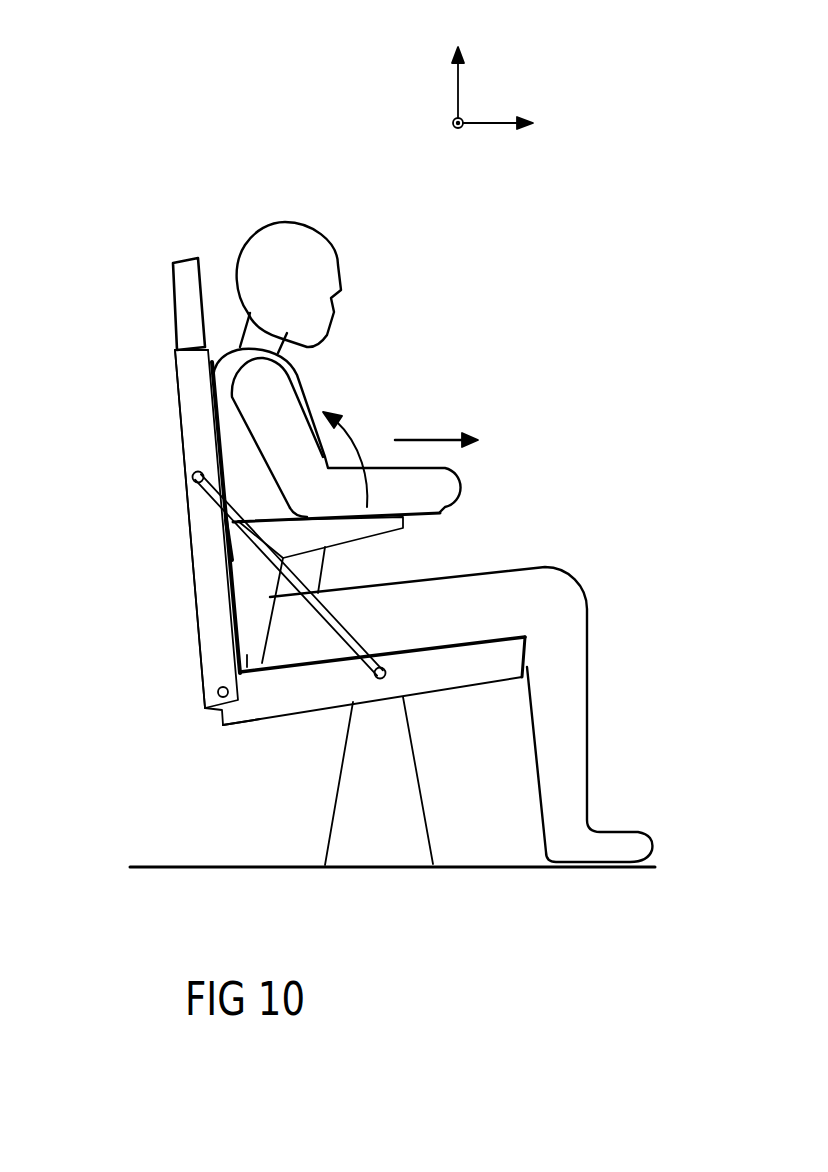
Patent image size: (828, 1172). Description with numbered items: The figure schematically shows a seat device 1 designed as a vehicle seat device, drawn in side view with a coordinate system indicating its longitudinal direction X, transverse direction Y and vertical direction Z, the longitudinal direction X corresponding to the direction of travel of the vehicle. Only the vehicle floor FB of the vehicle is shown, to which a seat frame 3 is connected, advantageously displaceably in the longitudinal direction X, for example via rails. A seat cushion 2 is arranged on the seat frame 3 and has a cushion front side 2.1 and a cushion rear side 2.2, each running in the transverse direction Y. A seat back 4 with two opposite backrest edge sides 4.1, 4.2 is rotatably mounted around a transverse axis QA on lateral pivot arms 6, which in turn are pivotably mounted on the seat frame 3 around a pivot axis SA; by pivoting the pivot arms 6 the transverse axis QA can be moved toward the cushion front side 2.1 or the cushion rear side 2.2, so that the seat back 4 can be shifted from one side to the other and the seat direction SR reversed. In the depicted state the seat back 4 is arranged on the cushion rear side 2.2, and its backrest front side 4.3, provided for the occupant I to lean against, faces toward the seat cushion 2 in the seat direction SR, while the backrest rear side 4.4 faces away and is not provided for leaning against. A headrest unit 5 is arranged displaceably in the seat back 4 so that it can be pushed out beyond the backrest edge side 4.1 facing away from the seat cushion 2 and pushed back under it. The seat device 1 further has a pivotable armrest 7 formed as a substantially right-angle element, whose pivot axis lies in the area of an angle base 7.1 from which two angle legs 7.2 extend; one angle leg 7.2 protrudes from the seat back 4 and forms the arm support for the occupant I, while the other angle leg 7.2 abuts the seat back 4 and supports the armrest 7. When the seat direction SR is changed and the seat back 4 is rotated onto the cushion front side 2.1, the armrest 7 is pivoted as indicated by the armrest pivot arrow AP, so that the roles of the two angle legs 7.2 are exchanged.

The seat device 1 is at (590, 255).
The seat cushion 2 is at (438, 650).
The cushion front side 2.1 is at (528, 665).
The cushion rear side 2.2 is at (220, 722).
The seat frame 3 is at (405, 855).
The seat back 4 is at (192, 423).
The backrest edge side 4.1 is at (193, 347).
The backrest edge side 4.2 is at (207, 710).
The backrest front side 4.3 is at (218, 392).
The backrest rear side 4.4 is at (188, 505).
The headrest unit 5 is at (185, 273).
The pivot arm 6 is at (303, 582).
The armrest 7 is at (248, 603).
The angle base 7.1 is at (228, 537).
The angle leg 7.2 is at (250, 675).
The occupant I is at (303, 267).
The transverse axis QA is at (192, 477).
The pivot axis SA is at (355, 703).
The vehicle floor FB is at (508, 868).
The armrest pivot arrow AP is at (353, 450).
The seat direction SR is at (436, 422).
The longitudinal direction X is at (510, 131).
The transverse direction Y is at (446, 131).
The vertical direction Z is at (449, 69).